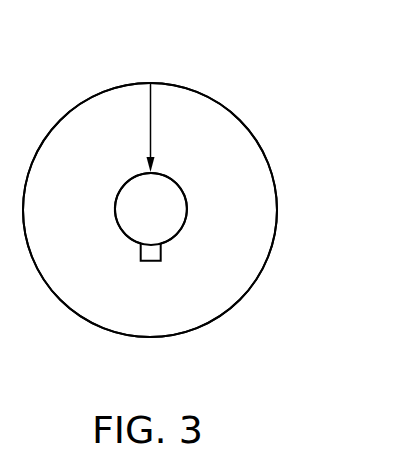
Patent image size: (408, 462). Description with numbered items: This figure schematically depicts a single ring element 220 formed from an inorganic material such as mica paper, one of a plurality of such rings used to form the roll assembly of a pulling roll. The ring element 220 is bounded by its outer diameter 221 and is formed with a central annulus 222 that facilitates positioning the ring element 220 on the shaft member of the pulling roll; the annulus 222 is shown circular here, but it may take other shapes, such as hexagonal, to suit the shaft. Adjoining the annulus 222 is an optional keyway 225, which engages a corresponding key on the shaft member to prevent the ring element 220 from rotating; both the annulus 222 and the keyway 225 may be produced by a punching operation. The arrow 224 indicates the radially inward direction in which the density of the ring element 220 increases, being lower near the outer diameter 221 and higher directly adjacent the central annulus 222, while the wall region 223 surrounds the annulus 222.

The ring element 220 is at (268, 83).
The outer diameter 221 is at (277, 210).
The central annulus 222 is at (130, 206).
The bore wall 223 is at (127, 237).
The arrow 224 is at (150, 125).
The keyway 225 is at (141, 261).